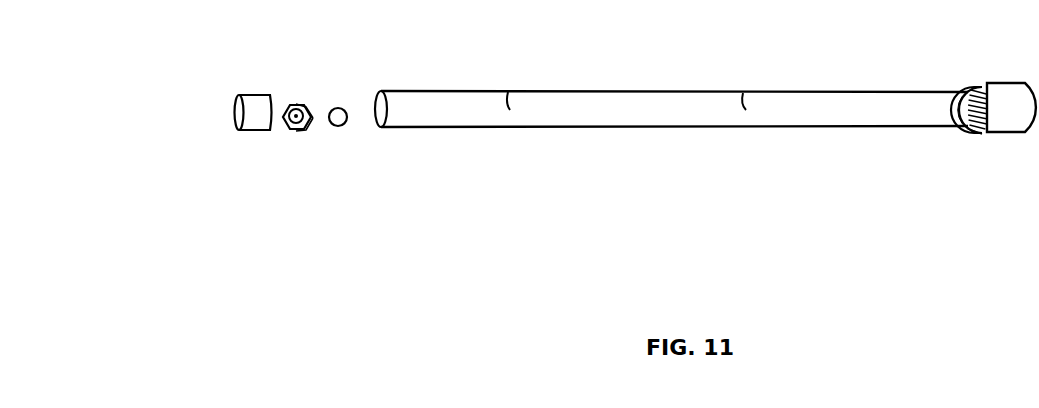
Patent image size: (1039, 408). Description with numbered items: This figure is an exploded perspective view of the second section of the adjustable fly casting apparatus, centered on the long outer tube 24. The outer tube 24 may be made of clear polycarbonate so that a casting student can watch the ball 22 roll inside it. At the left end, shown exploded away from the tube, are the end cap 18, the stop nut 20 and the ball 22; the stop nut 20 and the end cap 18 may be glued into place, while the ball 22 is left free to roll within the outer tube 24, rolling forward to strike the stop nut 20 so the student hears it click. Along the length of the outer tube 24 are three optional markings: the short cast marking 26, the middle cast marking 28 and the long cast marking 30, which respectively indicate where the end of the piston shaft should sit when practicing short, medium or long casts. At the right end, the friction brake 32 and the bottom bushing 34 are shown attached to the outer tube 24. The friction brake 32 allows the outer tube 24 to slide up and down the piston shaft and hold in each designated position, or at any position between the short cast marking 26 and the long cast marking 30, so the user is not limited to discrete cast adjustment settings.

The end cap 18 is at (247, 132).
The stop nut 20 is at (295, 92).
The ball 22 is at (342, 127).
The outer tube 24 is at (668, 132).
The short cast marking 26 is at (510, 90).
The middle cast marking 28 is at (748, 91).
The long cast marking 30 is at (955, 105).
The friction brake 32 is at (1005, 134).
The bottom bushing 34 is at (965, 133).